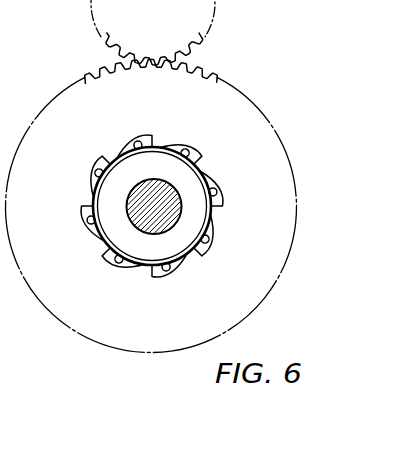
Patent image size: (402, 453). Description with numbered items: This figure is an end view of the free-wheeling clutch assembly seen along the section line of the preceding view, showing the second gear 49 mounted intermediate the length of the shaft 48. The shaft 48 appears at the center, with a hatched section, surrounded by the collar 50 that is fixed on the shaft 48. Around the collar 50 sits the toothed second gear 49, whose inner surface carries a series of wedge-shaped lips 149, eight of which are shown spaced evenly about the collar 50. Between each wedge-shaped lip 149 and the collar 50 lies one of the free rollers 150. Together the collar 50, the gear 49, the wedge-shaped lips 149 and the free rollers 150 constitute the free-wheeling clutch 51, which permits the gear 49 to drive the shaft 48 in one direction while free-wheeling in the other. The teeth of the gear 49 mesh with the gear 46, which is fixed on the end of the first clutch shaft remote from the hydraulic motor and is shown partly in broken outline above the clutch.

The gear 46 is at (205, 32).
The shaft 48 is at (162, 187).
The second gear 49 is at (236, 97).
The collar 50 is at (193, 222).
The free-wheeling clutch 51 is at (211, 187).
The wedge-shaped lips 149 is at (150, 136).
The free rollers 150 is at (134, 144).